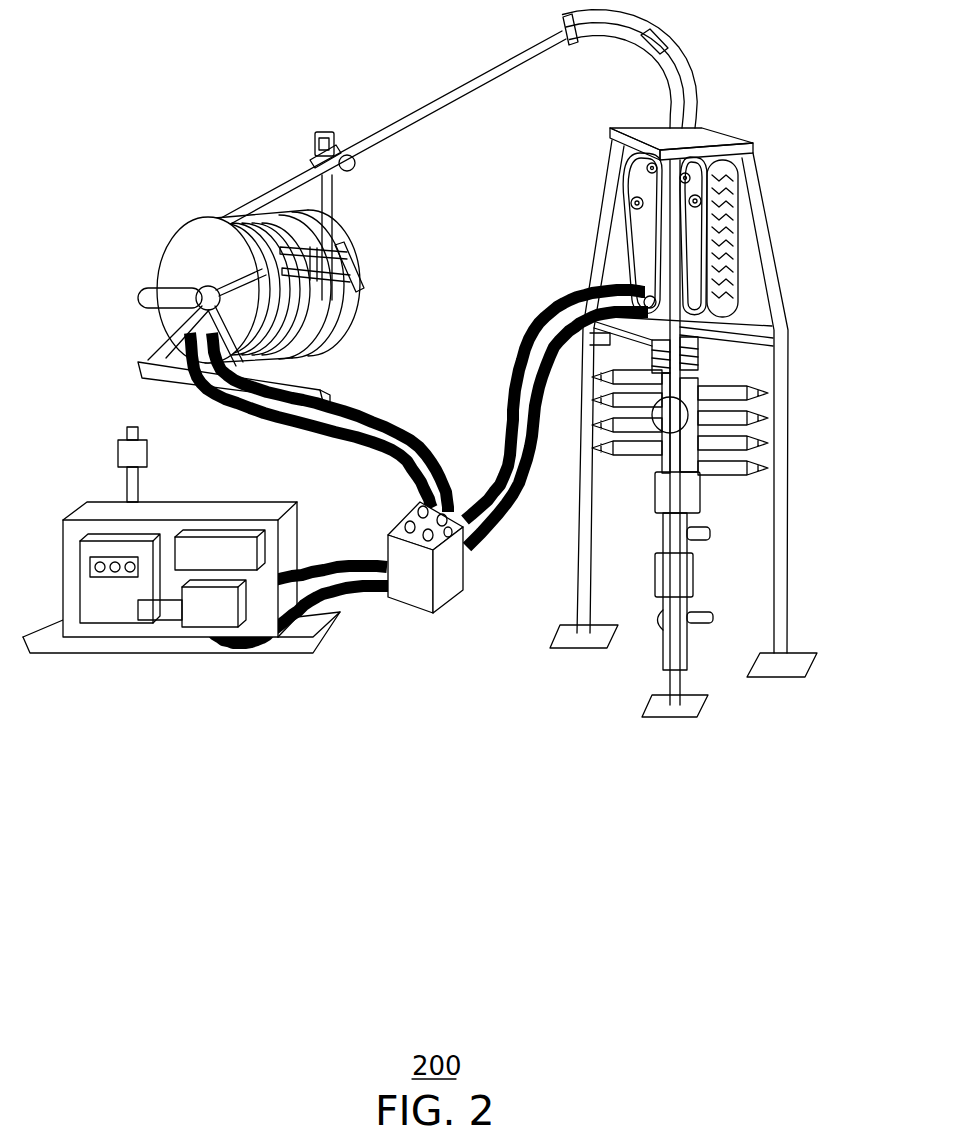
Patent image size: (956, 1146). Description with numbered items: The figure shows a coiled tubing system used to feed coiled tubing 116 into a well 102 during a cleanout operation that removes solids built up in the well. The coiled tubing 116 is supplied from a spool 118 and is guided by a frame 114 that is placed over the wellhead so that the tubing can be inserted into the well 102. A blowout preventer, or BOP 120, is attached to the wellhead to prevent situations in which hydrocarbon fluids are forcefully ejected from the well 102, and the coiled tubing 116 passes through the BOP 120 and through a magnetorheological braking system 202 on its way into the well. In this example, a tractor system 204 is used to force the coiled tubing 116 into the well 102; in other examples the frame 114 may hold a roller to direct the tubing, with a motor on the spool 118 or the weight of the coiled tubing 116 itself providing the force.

The well 102 is at (688, 656).
The frame 114 is at (781, 278).
The coiled tubing 116 is at (458, 83).
The spool 118 is at (172, 240).
The blowout preventer (BOP) 120 is at (798, 370).
The magnetorheological braking system 202 is at (698, 506).
The tractor system 204 is at (722, 183).